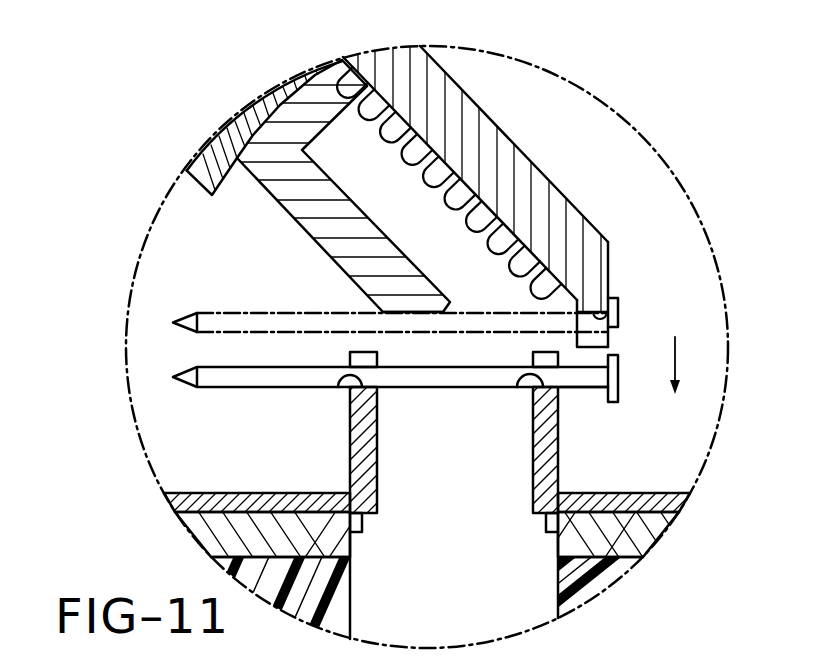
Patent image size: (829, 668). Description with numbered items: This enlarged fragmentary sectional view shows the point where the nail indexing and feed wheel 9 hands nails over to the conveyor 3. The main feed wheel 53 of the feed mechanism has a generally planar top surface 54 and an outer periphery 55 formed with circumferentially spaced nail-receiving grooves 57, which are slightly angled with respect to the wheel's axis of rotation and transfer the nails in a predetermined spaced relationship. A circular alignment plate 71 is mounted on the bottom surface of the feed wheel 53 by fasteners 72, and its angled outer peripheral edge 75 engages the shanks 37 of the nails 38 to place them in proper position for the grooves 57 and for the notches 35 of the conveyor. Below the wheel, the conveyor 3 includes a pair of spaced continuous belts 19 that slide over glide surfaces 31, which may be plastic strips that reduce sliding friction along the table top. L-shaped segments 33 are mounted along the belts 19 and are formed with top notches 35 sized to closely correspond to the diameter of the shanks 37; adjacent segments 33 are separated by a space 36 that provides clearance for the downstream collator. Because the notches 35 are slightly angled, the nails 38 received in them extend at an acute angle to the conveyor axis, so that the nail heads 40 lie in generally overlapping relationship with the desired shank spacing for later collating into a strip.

The conveyor 3 is at (213, 493).
The nail indexing and feed wheel 9 is at (509, 193).
The continuous belts 19 is at (215, 532).
The glide surfaces 31 is at (351, 592).
The L-shaped segments 33 is at (303, 493).
The notches 35 is at (337, 390).
The space 36 is at (474, 519).
The shanks 37 is at (593, 386).
The nails 38 is at (261, 388).
The nail heads 40 is at (620, 383).
The main feed wheel 53 is at (583, 206).
The top surface 54 is at (540, 170).
The outer periphery 55 is at (610, 283).
The nail-receiving grooves 57 is at (352, 97).
The circular alignment plate 71 is at (293, 210).
The fasteners 72 is at (208, 178).
The angled outer peripheral edge 75 is at (412, 314).